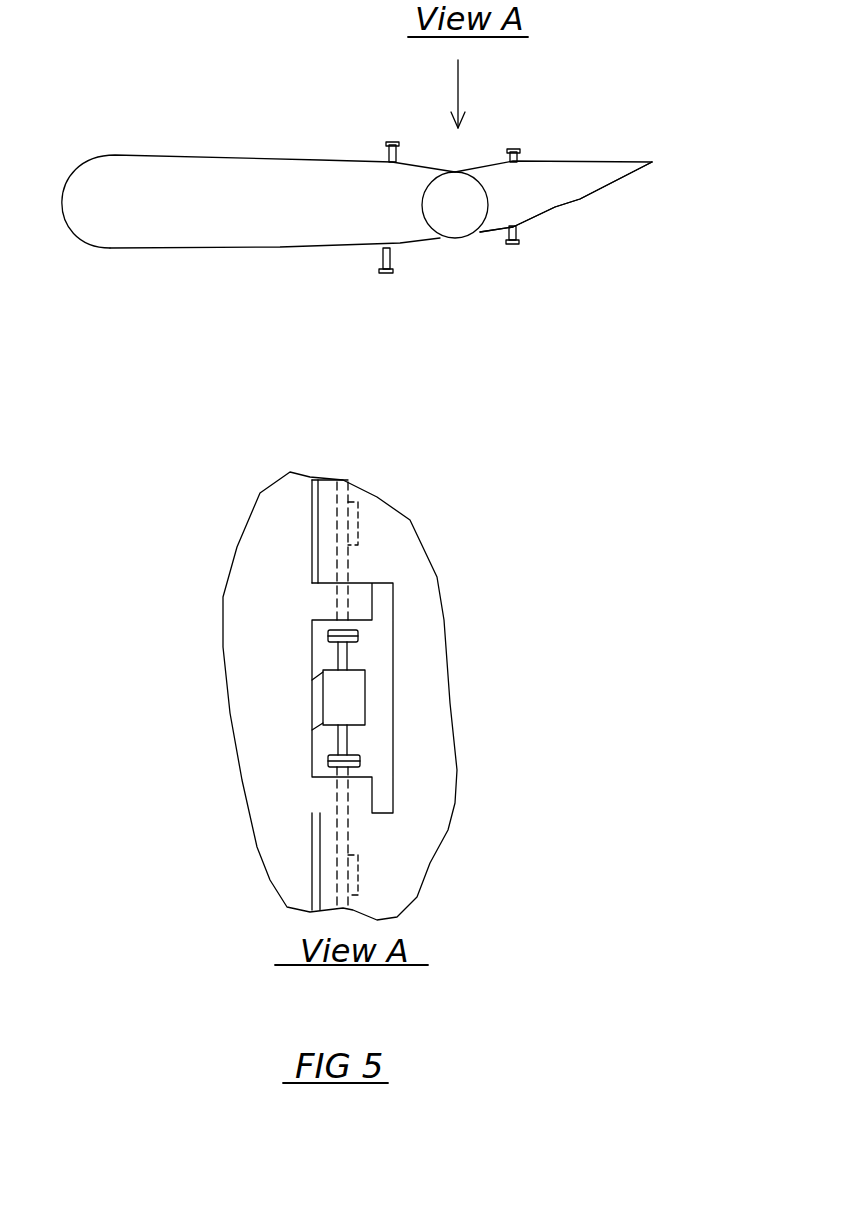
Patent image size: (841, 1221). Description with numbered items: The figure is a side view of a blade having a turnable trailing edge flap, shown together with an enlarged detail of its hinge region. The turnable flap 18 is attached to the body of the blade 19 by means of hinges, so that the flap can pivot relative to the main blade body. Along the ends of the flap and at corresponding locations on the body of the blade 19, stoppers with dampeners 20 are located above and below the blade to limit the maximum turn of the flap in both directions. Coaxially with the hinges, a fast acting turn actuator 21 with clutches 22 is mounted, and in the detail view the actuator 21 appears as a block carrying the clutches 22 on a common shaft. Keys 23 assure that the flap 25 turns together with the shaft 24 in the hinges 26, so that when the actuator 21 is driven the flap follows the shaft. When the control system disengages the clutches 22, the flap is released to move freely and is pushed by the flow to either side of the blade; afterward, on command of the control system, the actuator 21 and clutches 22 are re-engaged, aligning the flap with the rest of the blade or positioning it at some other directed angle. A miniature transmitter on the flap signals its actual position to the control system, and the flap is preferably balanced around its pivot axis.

The turnable flap 18 is at (577, 172).
The body of the blade 19 is at (258, 136).
The stoppers with dampeners 20 is at (516, 150).
The fast acting turn actuator 21 is at (453, 656).
The clutches 22 is at (459, 600).
The keys 23 is at (533, 450).
The shaft 24 is at (216, 710).
The flap 25 is at (603, 222).
The hinges 26 is at (286, 385).